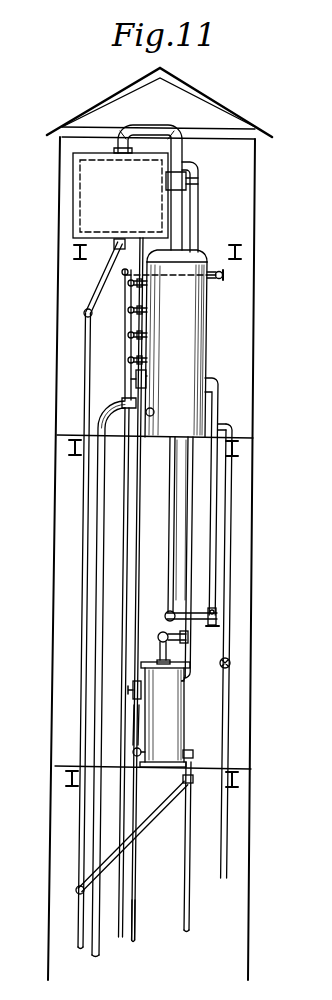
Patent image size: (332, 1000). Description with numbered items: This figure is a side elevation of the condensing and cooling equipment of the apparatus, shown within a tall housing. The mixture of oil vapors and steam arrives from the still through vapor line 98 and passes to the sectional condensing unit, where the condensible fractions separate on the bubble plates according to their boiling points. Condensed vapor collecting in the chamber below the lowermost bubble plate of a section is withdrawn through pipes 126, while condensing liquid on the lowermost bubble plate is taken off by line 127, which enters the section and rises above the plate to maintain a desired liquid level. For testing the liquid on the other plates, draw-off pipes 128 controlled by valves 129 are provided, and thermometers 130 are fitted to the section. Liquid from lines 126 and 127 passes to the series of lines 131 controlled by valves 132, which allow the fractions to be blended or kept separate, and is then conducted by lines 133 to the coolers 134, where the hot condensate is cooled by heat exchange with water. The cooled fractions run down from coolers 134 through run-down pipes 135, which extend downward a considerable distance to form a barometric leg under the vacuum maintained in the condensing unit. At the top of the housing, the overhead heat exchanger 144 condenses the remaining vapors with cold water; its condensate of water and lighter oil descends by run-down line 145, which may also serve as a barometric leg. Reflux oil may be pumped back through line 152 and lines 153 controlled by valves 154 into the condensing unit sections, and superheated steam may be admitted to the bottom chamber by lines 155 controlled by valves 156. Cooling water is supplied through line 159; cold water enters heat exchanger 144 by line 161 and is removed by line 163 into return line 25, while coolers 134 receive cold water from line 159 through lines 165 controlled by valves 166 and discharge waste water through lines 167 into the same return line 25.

The heat exchanger 144 is at (73, 200).
The line 163 is at (198, 206).
The lines 153 is at (209, 268).
The valves 154 is at (225, 290).
The line 161 is at (140, 262).
The run-down line 145 is at (88, 360).
The line 152 is at (134, 362).
The draw-off pipes 128 is at (139, 285).
The valves 129 is at (135, 313).
The thermometers 130 is at (146, 380).
The vapor line 98 is at (82, 947).
The line 127 is at (220, 395).
The lines 155 is at (228, 698).
The valves 156 is at (230, 662).
The pipes 126 is at (173, 485).
The lines 133 is at (194, 663).
The lines 131 is at (200, 612).
The valves 132 is at (168, 612).
The return line 25 is at (175, 627).
The lines 167 is at (161, 650).
The coolers 134 is at (184, 703).
The lines 165 is at (128, 697).
The valves 166 is at (133, 720).
The line 159 is at (136, 940).
The run-down pipes 135 is at (76, 902).